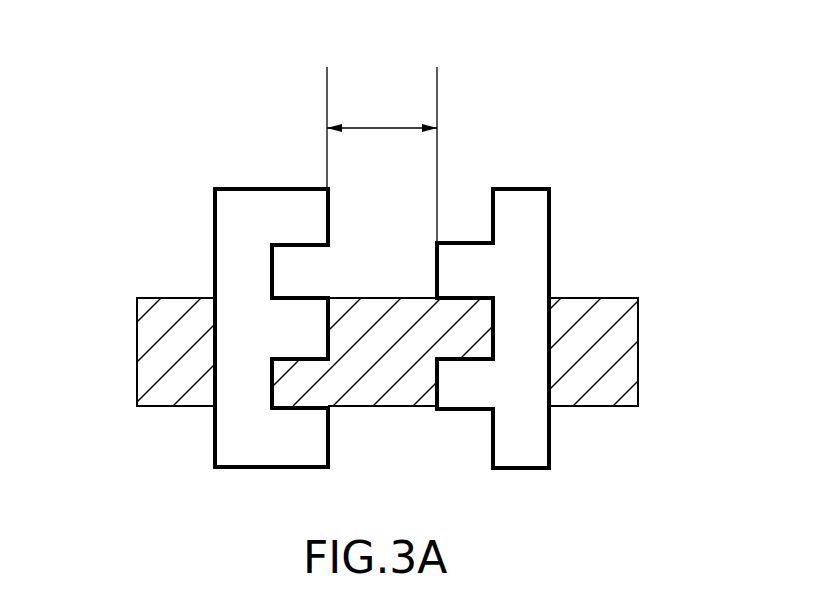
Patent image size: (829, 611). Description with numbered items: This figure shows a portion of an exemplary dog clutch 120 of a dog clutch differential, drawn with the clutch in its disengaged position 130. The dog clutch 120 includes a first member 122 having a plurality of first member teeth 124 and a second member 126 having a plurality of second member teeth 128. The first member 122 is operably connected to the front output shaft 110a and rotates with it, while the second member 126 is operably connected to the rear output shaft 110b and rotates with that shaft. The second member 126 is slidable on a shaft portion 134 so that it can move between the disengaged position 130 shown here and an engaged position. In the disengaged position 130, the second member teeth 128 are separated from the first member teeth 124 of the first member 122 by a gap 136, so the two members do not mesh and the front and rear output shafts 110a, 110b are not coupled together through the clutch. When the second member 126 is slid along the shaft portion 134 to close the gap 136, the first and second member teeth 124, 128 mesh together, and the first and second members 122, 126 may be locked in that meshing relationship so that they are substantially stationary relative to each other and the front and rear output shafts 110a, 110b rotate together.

The front output shaft 110a is at (170, 341).
The rear output shaft 110b is at (615, 342).
The dog clutch 120 is at (214, 309).
The first member 122 is at (248, 264).
The first member teeth 124 is at (305, 330).
The second member 126 is at (535, 326).
The second member teeth 128 is at (458, 385).
The disengaged position 130 is at (366, 264).
The shaft portion 134 is at (382, 328).
The gap 136 is at (382, 128).